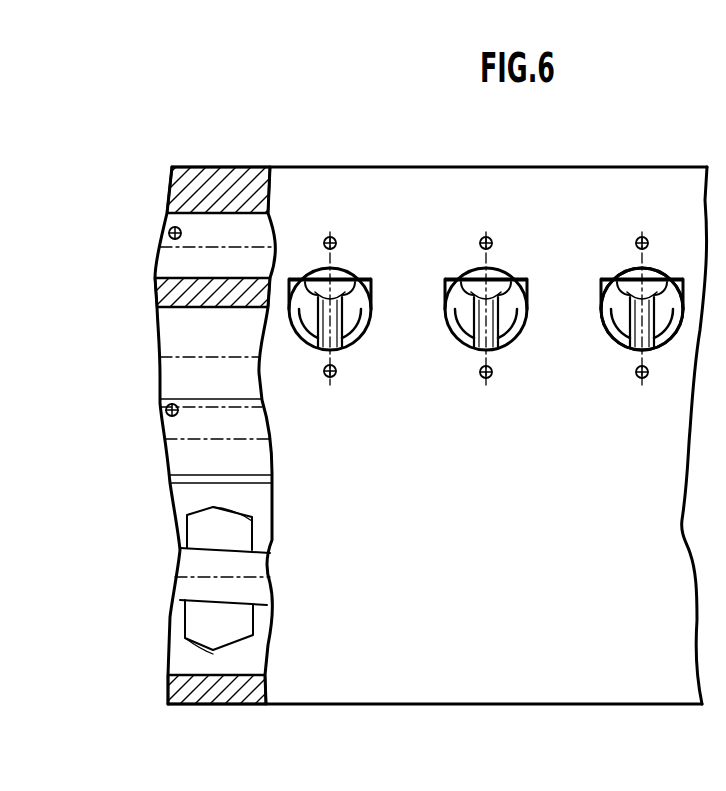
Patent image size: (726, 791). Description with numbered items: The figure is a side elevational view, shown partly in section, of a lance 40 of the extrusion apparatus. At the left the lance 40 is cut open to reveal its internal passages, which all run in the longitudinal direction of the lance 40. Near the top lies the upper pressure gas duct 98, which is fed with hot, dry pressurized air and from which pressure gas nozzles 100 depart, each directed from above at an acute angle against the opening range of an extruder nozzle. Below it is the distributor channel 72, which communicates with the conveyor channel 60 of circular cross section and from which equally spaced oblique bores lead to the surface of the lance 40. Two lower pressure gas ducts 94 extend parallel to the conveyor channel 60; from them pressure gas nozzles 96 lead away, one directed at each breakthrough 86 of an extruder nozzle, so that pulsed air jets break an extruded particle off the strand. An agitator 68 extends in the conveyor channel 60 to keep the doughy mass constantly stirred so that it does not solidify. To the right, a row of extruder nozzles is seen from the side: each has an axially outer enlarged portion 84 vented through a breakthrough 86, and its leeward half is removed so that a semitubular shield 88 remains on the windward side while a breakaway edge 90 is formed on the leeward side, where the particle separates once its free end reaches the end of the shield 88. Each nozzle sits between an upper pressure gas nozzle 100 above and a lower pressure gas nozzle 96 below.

The lance 40 is at (350, 712).
The conveyor channel 60 is at (178, 655).
The agitator 68 is at (166, 581).
The distributor channel 72 is at (168, 336).
The enlarged portion 84 is at (658, 271).
The breakthrough 86 is at (467, 347).
The semitubular shield 88 is at (450, 320).
The breakaway edge 90 is at (465, 280).
The lower pressure gas duct 94 is at (175, 461).
The pressure gas nozzle 96 is at (166, 410).
The upper pressure gas duct 98 is at (167, 265).
The pressure gas nozzle 100 is at (170, 229).